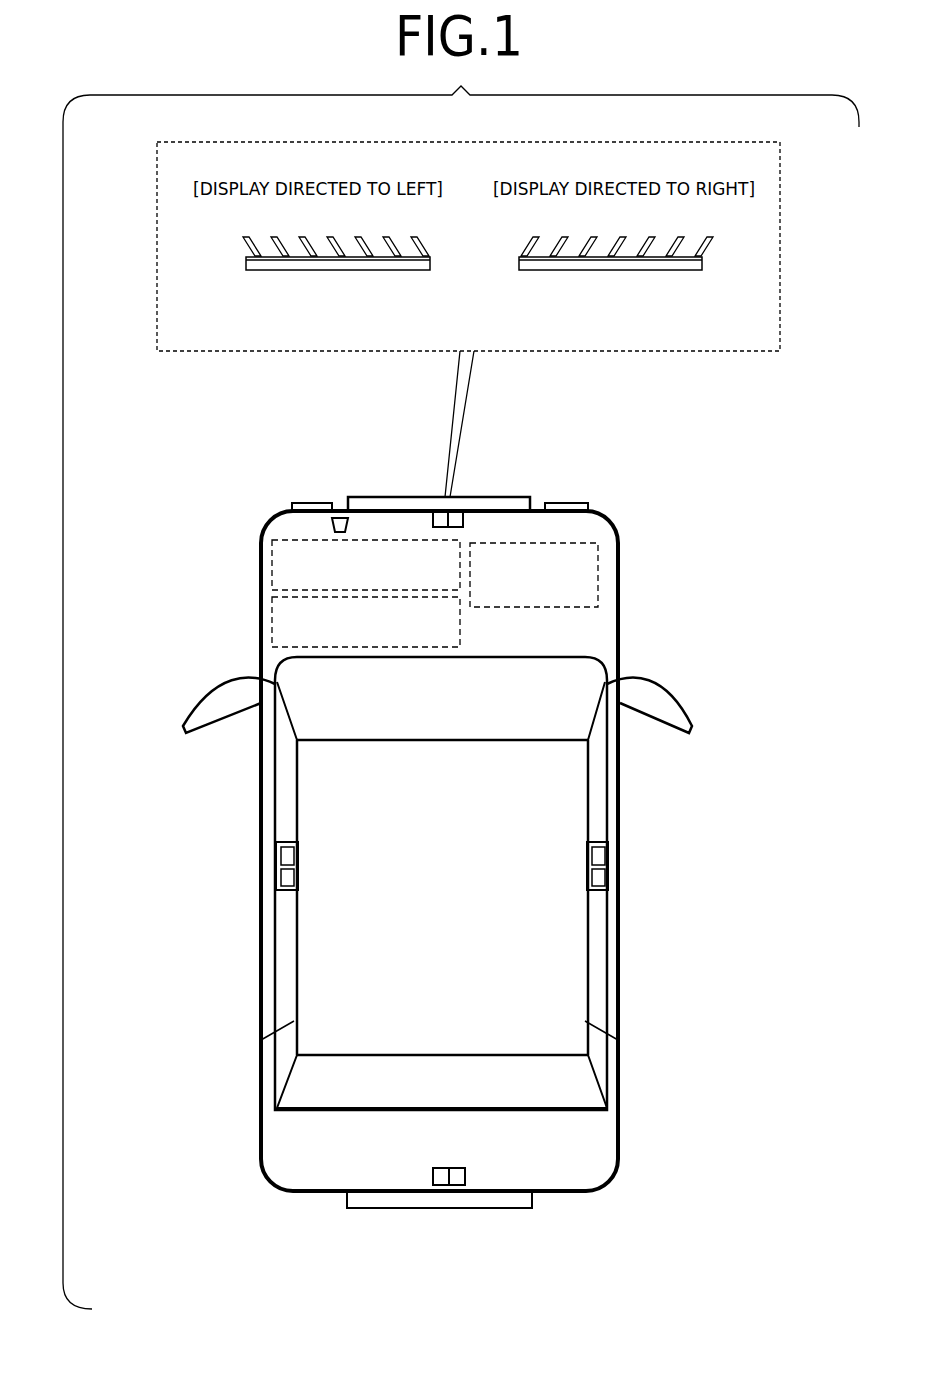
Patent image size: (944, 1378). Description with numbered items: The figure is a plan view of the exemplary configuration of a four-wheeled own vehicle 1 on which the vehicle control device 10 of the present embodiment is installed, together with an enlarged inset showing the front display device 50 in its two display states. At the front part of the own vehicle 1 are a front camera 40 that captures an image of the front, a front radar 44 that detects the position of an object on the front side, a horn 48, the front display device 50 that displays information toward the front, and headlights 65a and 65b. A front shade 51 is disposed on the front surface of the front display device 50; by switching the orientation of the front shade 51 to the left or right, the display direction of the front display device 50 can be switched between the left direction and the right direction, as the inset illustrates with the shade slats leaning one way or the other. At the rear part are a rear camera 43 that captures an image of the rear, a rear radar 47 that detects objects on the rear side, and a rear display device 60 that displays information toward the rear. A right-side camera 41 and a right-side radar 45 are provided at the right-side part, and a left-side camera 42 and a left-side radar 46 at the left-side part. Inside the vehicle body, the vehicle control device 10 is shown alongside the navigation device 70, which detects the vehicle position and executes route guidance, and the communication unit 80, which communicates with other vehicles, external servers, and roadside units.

The vehicle 1 is at (616, 525).
The vehicle control device 10 is at (272, 563).
The front camera 40 is at (432, 522).
The right-side camera 41 is at (612, 851).
The left-side camera 42 is at (278, 858).
The rear camera 43 is at (440, 1187).
The front radar 44 is at (463, 522).
The right-side radar 45 is at (610, 877).
The left-side radar 46 is at (280, 877).
The rear radar 47 is at (455, 1187).
The horn 48 is at (340, 513).
The front display device 50 is at (520, 497).
The front shade 51 is at (243, 248).
The rear display device 60 is at (518, 1208).
The headlight 65a is at (305, 503).
The headlight 65b is at (570, 503).
The navigation device 70 is at (598, 580).
The communication unit 80 is at (272, 618).